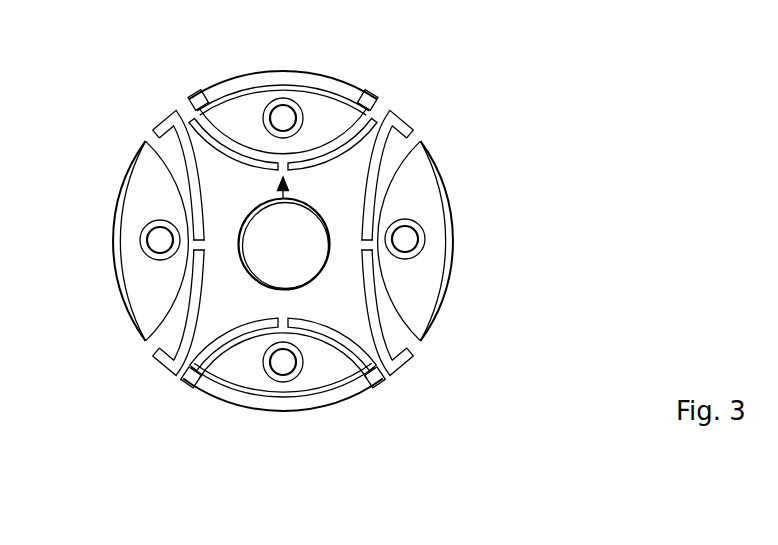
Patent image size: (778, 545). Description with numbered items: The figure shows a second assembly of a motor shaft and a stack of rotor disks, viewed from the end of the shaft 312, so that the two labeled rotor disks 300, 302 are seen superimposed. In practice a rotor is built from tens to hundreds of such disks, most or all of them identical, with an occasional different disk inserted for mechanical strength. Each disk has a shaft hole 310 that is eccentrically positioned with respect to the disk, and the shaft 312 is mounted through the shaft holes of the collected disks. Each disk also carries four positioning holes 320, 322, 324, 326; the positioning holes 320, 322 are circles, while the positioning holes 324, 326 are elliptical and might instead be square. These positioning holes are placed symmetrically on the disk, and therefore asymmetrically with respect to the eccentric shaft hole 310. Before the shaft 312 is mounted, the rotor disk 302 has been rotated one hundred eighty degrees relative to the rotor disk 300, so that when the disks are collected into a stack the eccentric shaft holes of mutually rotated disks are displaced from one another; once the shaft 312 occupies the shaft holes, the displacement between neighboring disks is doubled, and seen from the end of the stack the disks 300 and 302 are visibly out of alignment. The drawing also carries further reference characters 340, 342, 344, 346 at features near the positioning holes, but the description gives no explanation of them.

The rotor disk 300 is at (222, 96).
The rotor disk 302 is at (287, 72).
The shaft hole 310 is at (238, 230).
The motor shaft 312 is at (307, 262).
The positioning hole 320 is at (136, 240).
The positioning hole 322 is at (428, 243).
The positioning hole 324 is at (315, 122).
The positioning hole 326 is at (246, 387).
The left port 340 is at (152, 247).
The right port 342 is at (417, 251).
The upper port 344 is at (292, 110).
The lower port 346 is at (292, 378).